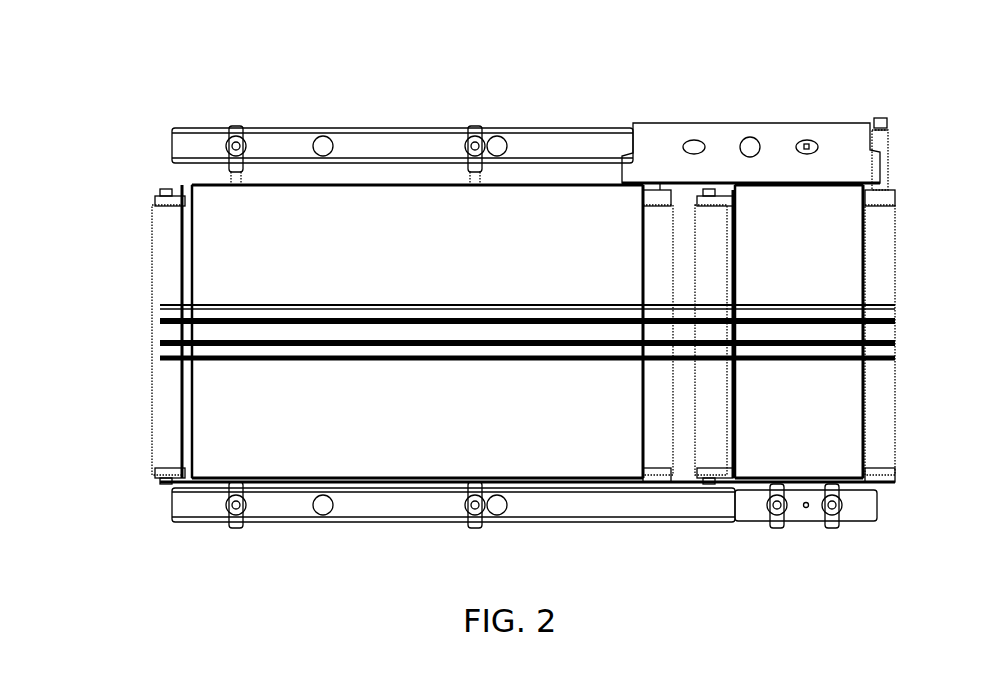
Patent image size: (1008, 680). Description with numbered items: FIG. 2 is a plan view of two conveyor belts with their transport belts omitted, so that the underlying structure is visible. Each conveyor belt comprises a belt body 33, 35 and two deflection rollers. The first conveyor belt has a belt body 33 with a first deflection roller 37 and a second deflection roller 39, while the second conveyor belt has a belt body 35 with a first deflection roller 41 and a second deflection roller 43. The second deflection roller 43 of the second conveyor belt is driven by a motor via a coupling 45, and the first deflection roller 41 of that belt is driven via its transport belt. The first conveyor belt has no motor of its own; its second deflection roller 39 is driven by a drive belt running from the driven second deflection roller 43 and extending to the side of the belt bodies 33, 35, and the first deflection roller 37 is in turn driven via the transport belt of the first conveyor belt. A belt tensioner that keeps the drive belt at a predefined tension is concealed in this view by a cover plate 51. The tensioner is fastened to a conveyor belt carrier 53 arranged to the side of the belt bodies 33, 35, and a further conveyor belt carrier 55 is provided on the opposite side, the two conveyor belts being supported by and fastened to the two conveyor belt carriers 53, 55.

The belt body 33 is at (303, 250).
The belt body 35 is at (768, 245).
The first deflection roller 37 is at (163, 275).
The second deflection roller 39 is at (660, 263).
The first deflection roller 41 is at (713, 408).
The second deflection roller 43 is at (882, 385).
The coupling 45 is at (880, 120).
The cover plate 51 is at (780, 143).
The conveyor belt carrier 53 is at (407, 147).
The conveyor belt carrier 55 is at (405, 508).